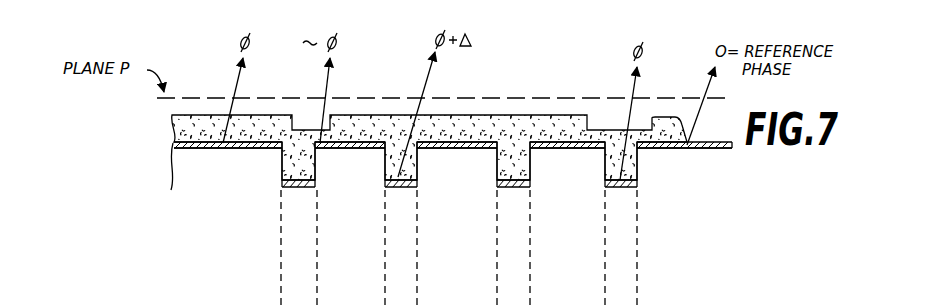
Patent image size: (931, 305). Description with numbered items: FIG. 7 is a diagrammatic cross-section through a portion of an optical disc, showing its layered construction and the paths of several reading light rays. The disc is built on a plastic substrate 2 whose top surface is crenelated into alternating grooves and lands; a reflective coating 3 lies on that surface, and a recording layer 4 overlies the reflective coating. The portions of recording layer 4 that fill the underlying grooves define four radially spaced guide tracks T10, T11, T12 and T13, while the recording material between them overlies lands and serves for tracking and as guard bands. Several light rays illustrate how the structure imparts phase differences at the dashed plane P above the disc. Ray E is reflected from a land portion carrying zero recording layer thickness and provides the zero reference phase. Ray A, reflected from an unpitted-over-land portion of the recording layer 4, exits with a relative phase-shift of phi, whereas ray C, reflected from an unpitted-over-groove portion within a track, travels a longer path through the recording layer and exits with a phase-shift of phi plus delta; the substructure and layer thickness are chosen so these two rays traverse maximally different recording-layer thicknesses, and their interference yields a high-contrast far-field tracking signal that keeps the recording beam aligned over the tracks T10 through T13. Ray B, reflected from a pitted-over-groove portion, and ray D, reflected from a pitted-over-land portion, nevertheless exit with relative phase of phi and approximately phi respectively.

The substrate 2 is at (172, 168).
The reflective coating 3 is at (173, 147).
The recording layer 4 is at (172, 130).
The guide track T10 is at (288, 195).
The guide track T11 is at (397, 195).
The guide track T12 is at (510, 195).
The guide track T13 is at (621, 196).
The light ray A is at (223, 143).
The light ray B is at (620, 180).
The light ray C is at (398, 177).
The light ray D is at (320, 143).
The light ray E is at (687, 145).